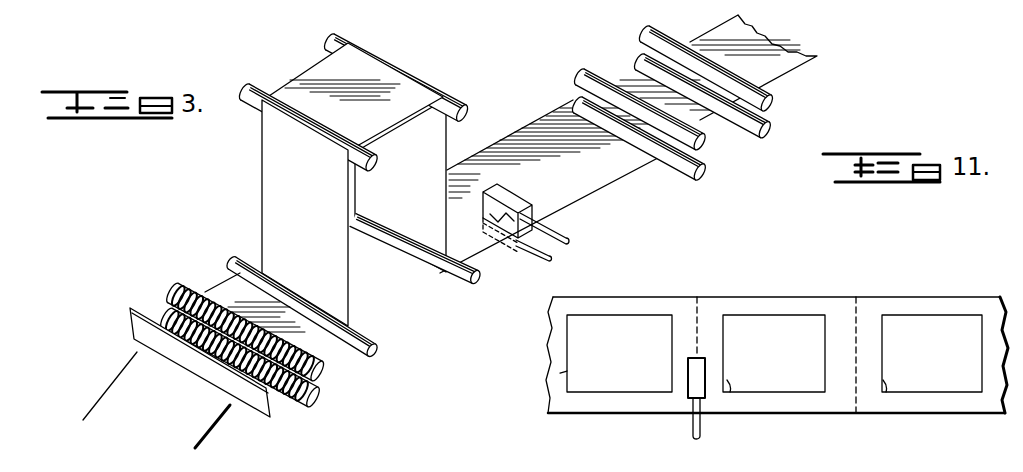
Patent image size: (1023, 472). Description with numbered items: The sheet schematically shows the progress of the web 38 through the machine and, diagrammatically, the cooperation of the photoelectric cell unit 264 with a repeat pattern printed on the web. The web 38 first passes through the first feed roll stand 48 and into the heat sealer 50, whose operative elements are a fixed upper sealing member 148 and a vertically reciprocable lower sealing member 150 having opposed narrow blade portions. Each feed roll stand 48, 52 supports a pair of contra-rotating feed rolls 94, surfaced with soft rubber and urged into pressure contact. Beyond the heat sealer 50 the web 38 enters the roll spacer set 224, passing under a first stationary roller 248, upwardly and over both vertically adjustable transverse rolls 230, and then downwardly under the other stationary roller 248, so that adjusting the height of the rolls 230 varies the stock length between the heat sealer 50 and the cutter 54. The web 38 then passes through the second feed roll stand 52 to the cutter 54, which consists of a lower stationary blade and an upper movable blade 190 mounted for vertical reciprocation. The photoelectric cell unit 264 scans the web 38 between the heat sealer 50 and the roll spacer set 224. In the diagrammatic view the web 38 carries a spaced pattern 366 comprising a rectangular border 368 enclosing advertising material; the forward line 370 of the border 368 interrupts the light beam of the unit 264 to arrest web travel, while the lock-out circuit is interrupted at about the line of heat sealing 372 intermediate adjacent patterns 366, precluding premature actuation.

In FIG. 3, the web 38 is at (621, 162).
In FIG. 11, the web 38 is at (756, 297).
In FIG. 3, the first feed roll stand 48 is at (632, 37).
In FIG. 3, the heat sealer 50 is at (652, 110).
In FIG. 3, the second feed roll stand 52 is at (167, 277).
In FIG. 3, the cutter 54 is at (124, 300).
In FIG. 3, the feed rolls 94 is at (493, 212).
In FIG. 3, the upper sealing member 148 is at (712, 143).
In FIG. 3, the lower sealing member 150 is at (708, 173).
In FIG. 3, the upper movable blade 190 is at (262, 413).
In FIG. 3, the roll spacer set 224 is at (296, 62).
In FIG. 3, the transverse rolls 230 is at (467, 113).
In FIG. 3, the stationary roller 248 is at (471, 283).
In FIG. 3, the photoelectric cell unit 264 is at (500, 175).
In FIG. 11, the photoelectric cell unit 264 is at (680, 396).
In FIG. 11, the pattern 366 is at (631, 306).
In FIG. 11, the rectangular border 368 is at (589, 314).
In FIG. 11, the forward line 370 is at (567, 371).
In FIG. 11, the line of heat sealing 372 is at (699, 300).